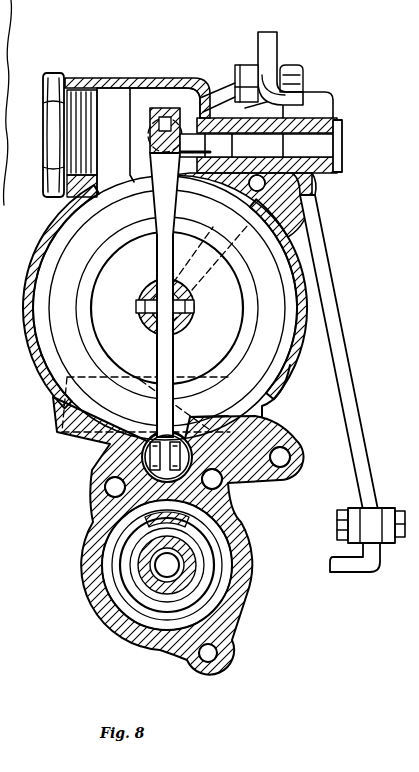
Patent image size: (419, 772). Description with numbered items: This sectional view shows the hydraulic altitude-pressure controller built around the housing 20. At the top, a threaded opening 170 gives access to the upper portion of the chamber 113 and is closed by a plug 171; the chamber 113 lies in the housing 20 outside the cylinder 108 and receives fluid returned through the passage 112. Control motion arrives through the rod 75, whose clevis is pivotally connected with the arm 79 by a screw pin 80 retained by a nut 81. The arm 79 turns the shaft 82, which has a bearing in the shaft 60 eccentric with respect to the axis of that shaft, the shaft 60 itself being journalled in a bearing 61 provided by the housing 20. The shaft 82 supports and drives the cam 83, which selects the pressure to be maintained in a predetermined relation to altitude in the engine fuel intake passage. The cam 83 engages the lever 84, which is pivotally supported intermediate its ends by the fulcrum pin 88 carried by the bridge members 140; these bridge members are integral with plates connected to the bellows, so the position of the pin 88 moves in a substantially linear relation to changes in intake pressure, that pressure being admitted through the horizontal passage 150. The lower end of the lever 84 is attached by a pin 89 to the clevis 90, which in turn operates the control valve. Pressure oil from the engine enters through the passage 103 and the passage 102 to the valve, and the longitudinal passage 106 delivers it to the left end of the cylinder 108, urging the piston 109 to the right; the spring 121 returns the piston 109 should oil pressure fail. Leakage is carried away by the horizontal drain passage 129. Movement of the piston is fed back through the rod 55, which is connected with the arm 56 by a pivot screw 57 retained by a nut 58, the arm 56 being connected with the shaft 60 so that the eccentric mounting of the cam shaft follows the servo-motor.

The housing 20 is at (125, 78).
The plug 171 is at (52, 72).
The opening 170 is at (78, 90).
The chamber 113 is at (170, 86).
The lever 84 is at (150, 112).
The cam 83 is at (160, 125).
The rod 75 is at (198, 98).
The screw pin 80 is at (234, 74).
The nut 81 is at (290, 66).
The bearing 61 is at (302, 92).
The arm 79 is at (332, 104).
The shaft 82 is at (331, 146).
The shaft 60 is at (325, 167).
The horizontal passage 150 is at (230, 206).
The arm 56 is at (331, 273).
The bridge members 140 is at (148, 293).
The fulcrum pin 88 is at (135, 305).
The passage 102 is at (218, 416).
The clevis 90 is at (150, 458).
The pin 89 is at (145, 470).
The longitudinal passage 106 is at (104, 489).
The spring 121 is at (150, 519).
The piston 109 is at (102, 562).
The cylinder 108 is at (140, 594).
The horizontal drain passage 129 is at (208, 653).
The passage 103 is at (290, 457).
The passage 112 is at (224, 480).
The pivot screw 57 is at (396, 510).
The nut 58 is at (346, 540).
The rod 55 is at (361, 572).